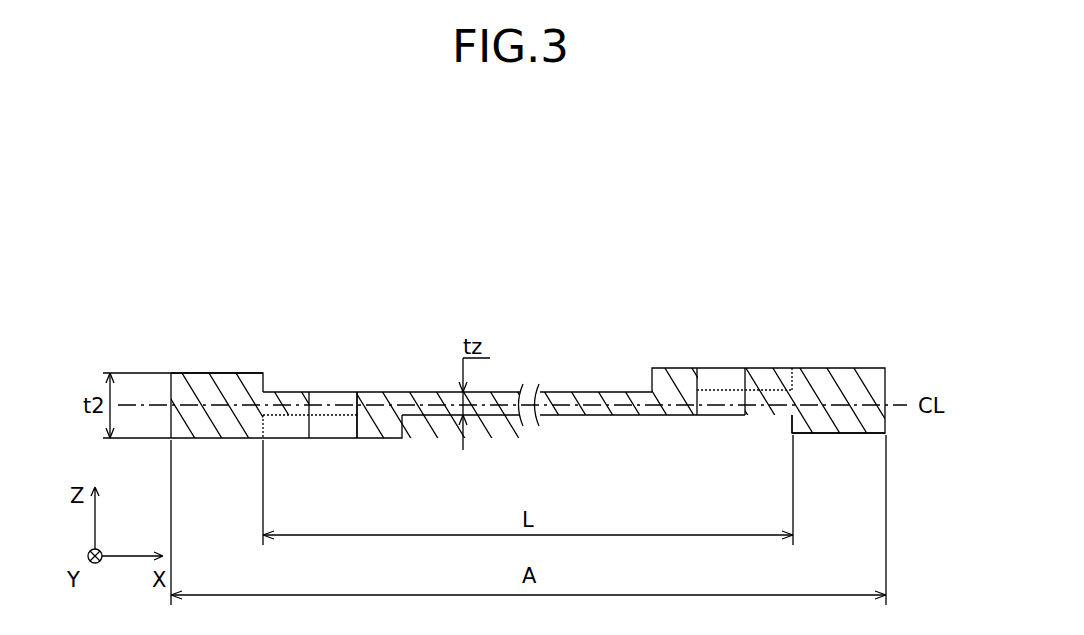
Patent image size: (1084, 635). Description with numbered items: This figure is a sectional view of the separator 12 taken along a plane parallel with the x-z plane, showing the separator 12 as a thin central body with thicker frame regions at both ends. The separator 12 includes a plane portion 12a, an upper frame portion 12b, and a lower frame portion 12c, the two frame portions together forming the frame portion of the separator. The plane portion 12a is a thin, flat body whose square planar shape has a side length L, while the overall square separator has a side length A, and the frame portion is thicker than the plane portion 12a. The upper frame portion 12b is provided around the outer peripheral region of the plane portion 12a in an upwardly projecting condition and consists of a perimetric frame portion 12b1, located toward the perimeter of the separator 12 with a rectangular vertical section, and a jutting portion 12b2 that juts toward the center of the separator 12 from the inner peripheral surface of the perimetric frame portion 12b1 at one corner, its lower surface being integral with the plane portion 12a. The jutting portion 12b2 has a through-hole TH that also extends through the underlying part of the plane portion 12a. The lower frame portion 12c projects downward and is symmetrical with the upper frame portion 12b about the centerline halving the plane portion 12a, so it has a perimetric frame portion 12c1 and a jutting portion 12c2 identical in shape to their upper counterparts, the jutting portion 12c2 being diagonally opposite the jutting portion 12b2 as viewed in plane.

The separator 12 is at (637, 255).
The plane portion 12a is at (564, 392).
The upper frame portion 12b is at (228, 327).
The perimetric frame portion 12b1 is at (205, 372).
The jutting portion 12b2 is at (685, 375).
The lower frame portion 12c is at (217, 473).
The perimetric frame portion 12c1 is at (812, 434).
The jutting portion 12c2 is at (372, 432).
The through-hole TH is at (744, 378).